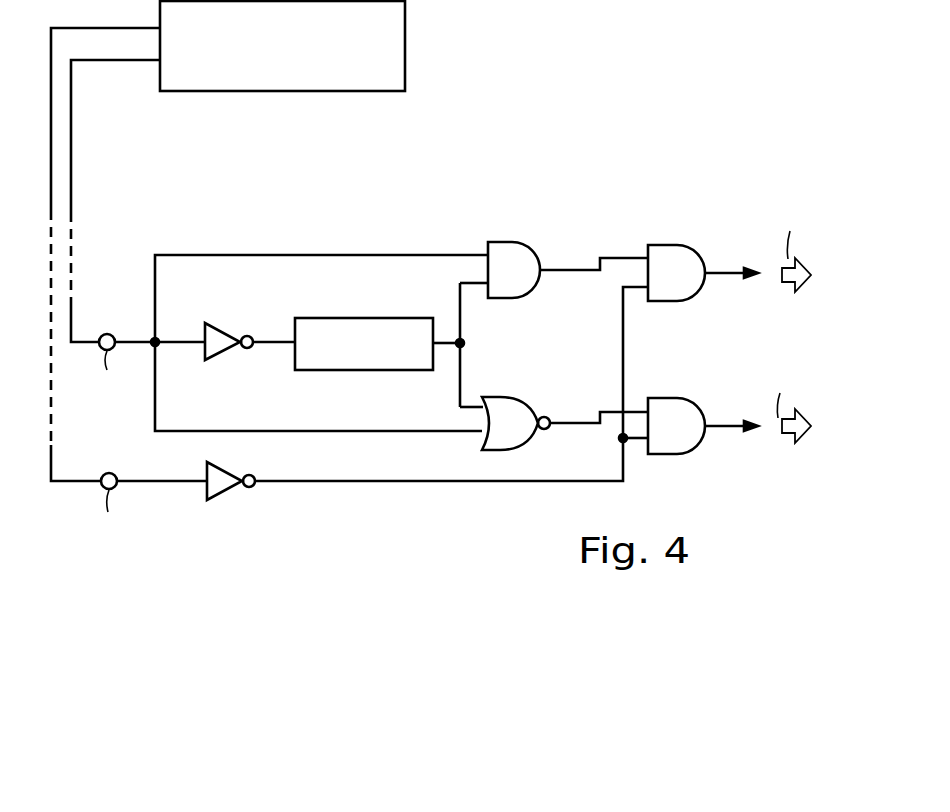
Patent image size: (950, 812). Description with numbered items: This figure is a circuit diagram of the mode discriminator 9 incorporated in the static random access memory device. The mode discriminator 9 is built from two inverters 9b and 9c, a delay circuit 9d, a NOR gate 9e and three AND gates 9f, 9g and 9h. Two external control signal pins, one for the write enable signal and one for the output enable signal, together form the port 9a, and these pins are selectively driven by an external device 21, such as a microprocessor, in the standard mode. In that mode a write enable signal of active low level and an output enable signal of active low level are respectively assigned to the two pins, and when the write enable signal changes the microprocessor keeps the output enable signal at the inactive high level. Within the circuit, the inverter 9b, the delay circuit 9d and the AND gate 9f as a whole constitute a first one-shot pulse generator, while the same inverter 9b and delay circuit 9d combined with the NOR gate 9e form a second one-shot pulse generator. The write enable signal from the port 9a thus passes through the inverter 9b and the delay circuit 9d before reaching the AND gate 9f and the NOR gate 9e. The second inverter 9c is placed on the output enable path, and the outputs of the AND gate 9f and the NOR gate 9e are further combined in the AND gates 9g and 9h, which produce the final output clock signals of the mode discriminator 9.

The external device 21 is at (405, 53).
The mode discriminator 9 is at (778, 168).
The port 9a is at (130, 302).
The inverter 9b is at (220, 323).
The inverter 9c is at (217, 464).
The delay circuit 9d is at (360, 318).
The NOR gate 9e is at (505, 396).
The AND gate 9f is at (510, 242).
The AND gate 9g is at (690, 245).
The AND gate 9h is at (680, 398).